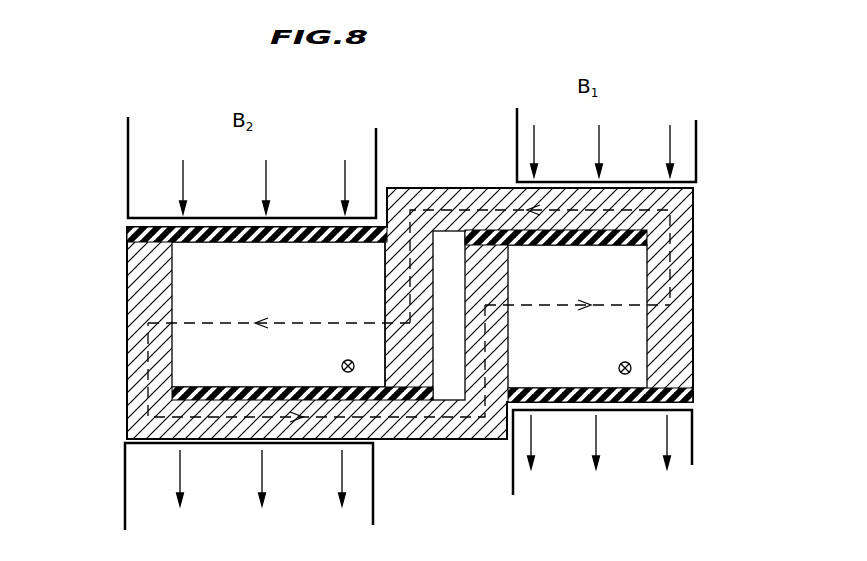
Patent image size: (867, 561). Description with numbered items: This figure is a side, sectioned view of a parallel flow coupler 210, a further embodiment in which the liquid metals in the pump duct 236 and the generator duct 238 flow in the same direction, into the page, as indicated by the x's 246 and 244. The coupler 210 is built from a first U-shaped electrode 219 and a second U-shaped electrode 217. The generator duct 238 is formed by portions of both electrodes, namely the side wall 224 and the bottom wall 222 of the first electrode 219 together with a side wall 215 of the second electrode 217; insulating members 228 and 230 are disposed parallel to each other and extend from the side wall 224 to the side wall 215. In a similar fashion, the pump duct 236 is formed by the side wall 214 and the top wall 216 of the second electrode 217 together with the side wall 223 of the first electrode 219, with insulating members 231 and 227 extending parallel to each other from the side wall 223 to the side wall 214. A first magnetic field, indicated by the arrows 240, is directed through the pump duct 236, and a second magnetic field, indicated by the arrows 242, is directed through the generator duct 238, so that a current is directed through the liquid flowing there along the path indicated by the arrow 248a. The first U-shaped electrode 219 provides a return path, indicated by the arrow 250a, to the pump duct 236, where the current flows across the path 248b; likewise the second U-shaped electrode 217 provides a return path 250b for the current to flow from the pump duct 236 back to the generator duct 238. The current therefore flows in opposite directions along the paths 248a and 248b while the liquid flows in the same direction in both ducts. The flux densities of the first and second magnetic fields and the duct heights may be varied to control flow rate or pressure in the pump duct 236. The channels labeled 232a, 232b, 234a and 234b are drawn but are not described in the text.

The parallel flow coupler 210 is at (99, 180).
The side wall 214 is at (695, 296).
The side wall 215 is at (387, 259).
The top wall 216 is at (700, 191).
The second U-shaped electrode 217 is at (696, 333).
The first U-shaped electrode 219 is at (127, 268).
The bottom wall 222 is at (410, 439).
The side wall 223 is at (510, 329).
The side wall 224 is at (126, 292).
The insulating member 227 is at (558, 250).
The insulating member 228 is at (262, 250).
The insulating member 230 is at (194, 386).
The insulating member 231 is at (545, 388).
The first fluid channel 232a is at (696, 143).
The first fluid channel 232b is at (692, 441).
The second fluid channel 234a is at (128, 155).
The second fluid channel 234b is at (125, 488).
The pump duct 236 is at (571, 356).
The generator duct 238 is at (273, 353).
The arrows 240 is at (600, 138).
The arrows 242 is at (183, 176).
The x 244 is at (623, 362).
The x 246 is at (350, 351).
The arrow 248a is at (306, 320).
The path 248b is at (550, 303).
The arrow 250a is at (243, 414).
The return path 250b is at (490, 197).